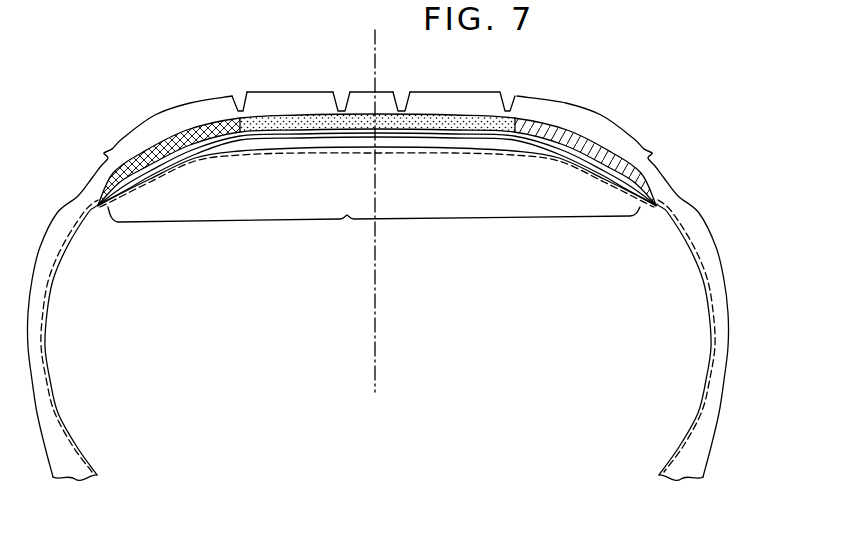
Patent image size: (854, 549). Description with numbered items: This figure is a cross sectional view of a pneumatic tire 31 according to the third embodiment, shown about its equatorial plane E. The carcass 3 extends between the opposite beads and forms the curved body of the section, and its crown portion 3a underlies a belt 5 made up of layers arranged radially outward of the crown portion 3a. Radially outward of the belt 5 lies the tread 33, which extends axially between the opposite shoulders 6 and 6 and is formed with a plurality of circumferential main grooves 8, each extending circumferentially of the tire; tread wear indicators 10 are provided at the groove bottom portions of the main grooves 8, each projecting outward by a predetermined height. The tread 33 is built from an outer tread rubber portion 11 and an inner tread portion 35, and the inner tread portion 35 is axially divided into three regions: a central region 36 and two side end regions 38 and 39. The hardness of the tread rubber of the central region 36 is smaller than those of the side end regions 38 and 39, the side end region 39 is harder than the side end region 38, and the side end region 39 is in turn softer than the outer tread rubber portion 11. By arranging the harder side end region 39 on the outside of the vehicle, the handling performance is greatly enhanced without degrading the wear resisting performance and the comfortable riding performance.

The pneumatic tire 31 is at (519, 80).
The tread 33 is at (455, 88).
The outer tread rubber portion 11 is at (280, 92).
The circumferential main groove 8 is at (342, 110).
The tread wear indicator 10 is at (401, 110).
The inner tread portion 35 is at (185, 128).
The central region 36 is at (407, 129).
The side end region 38 is at (577, 147).
The side end region 39 is at (153, 165).
The belt 5 is at (277, 147).
The carcass 3 is at (73, 241).
The shoulder 6 is at (123, 140).
The crown portion 3a is at (374, 232).
The equatorial plane E is at (376, 302).